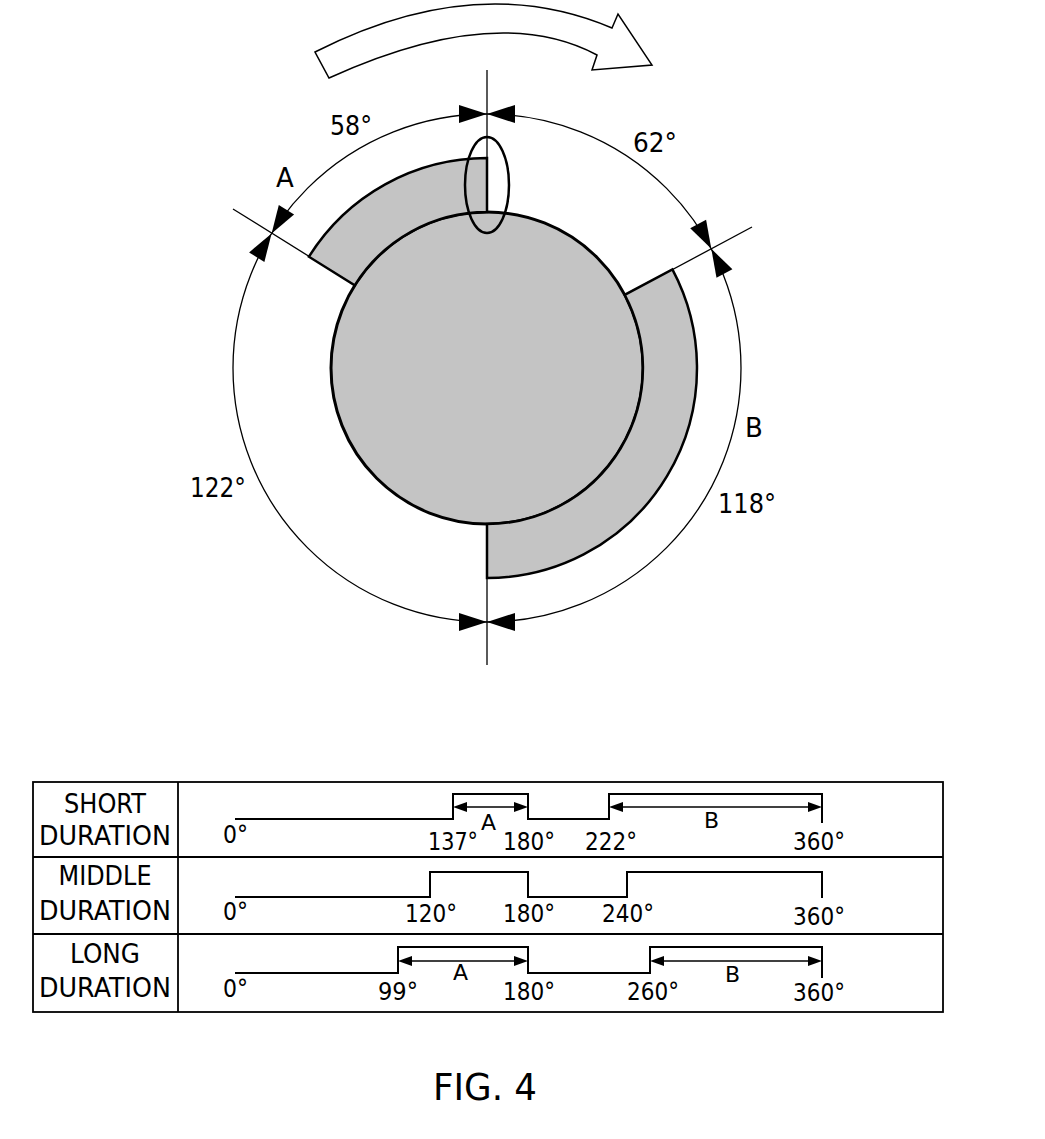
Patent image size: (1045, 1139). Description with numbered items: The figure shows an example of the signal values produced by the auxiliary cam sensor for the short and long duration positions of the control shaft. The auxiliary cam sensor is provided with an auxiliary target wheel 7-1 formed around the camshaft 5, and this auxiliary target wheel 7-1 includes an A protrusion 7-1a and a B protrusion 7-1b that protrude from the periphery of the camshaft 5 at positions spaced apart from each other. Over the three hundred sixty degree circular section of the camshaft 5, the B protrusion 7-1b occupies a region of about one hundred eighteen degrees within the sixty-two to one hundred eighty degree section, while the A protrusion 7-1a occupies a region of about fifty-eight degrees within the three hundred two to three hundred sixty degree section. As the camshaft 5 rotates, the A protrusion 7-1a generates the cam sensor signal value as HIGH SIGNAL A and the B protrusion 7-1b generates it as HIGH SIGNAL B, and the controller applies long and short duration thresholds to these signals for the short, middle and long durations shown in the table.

The auxiliary target wheel 7-1 is at (495, 338).
The A protrusion 7-1a is at (338, 260).
The B protrusion 7-1b is at (673, 328).
The camshaft 5 is at (367, 388).